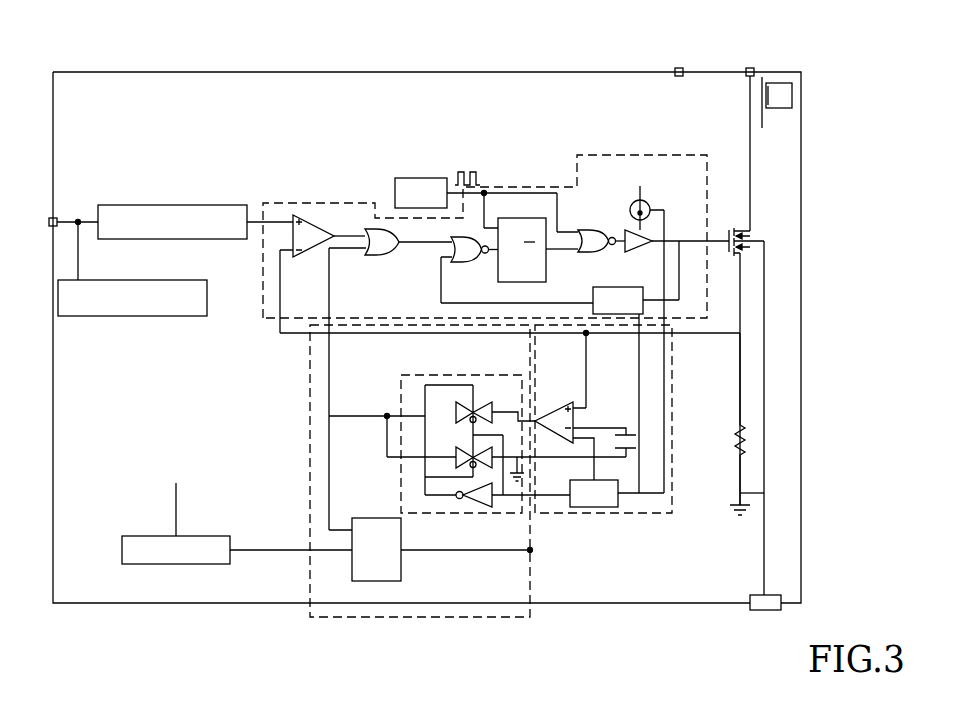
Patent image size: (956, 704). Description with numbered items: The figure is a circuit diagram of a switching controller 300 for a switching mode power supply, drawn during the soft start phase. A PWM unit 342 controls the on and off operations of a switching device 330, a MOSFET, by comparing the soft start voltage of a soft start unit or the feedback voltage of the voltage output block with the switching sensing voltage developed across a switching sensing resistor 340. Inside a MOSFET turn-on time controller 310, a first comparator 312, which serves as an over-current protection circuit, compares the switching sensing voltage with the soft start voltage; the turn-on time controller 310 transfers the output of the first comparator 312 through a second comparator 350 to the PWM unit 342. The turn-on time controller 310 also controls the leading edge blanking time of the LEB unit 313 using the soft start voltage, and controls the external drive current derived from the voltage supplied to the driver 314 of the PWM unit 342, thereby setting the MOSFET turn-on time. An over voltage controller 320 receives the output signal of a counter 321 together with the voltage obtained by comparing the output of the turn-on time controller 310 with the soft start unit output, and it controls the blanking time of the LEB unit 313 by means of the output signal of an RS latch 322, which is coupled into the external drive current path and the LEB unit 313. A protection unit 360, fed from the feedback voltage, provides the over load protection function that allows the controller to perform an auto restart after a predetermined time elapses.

The switching controller 300 is at (801, 164).
The MOSFET turn-on time controller 310 is at (672, 422).
The first comparator 312 is at (578, 424).
The LEB unit 313 is at (622, 287).
The driver 314 is at (650, 212).
The over voltage controller 320 is at (530, 580).
The counter 321 is at (217, 535).
The RS latch 322 is at (354, 518).
The switching device 330 is at (737, 228).
The switching sensing resistor 340 is at (742, 440).
The PWM unit 342 is at (302, 202).
The second comparator 350 is at (465, 375).
The protection unit 360 is at (128, 316).